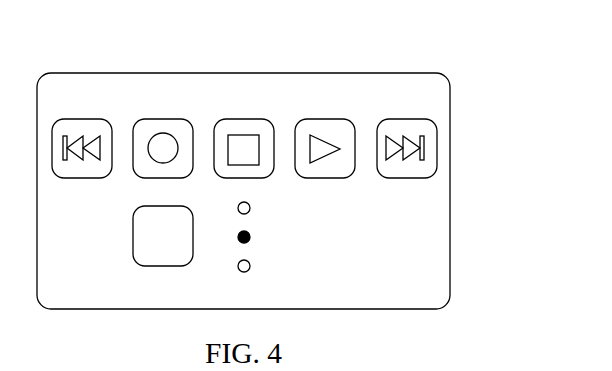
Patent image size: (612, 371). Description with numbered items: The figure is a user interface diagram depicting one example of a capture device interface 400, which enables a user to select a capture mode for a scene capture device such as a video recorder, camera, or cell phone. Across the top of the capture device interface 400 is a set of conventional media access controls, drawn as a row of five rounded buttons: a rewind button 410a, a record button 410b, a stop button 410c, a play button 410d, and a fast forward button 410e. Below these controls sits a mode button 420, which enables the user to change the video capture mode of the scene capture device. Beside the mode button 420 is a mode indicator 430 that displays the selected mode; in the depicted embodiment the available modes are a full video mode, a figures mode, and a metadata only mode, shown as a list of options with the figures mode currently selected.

The capture device interface 400 is at (484, 51).
The rewind button 410a is at (80, 118).
The record button 410b is at (161, 118).
The stop button 410c is at (242, 118).
The play button 410d is at (323, 118).
The fast forward button 410e is at (405, 118).
The mode button 420 is at (166, 257).
The mode indicator 430 is at (386, 237).